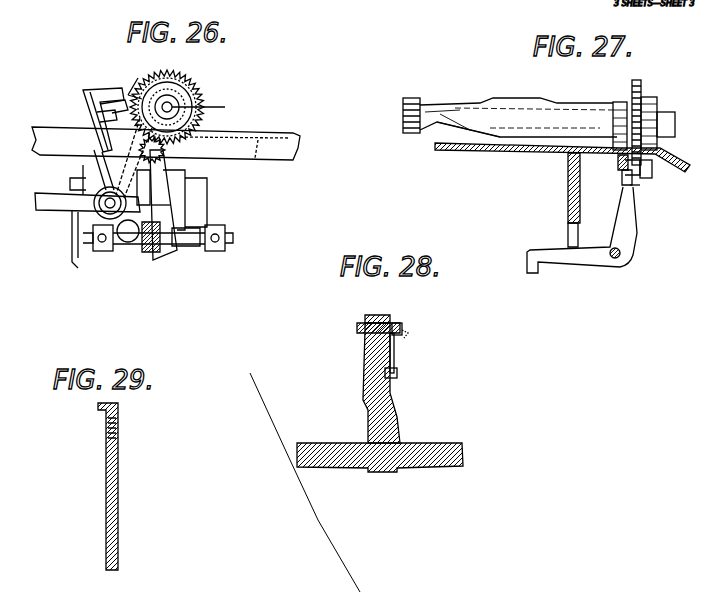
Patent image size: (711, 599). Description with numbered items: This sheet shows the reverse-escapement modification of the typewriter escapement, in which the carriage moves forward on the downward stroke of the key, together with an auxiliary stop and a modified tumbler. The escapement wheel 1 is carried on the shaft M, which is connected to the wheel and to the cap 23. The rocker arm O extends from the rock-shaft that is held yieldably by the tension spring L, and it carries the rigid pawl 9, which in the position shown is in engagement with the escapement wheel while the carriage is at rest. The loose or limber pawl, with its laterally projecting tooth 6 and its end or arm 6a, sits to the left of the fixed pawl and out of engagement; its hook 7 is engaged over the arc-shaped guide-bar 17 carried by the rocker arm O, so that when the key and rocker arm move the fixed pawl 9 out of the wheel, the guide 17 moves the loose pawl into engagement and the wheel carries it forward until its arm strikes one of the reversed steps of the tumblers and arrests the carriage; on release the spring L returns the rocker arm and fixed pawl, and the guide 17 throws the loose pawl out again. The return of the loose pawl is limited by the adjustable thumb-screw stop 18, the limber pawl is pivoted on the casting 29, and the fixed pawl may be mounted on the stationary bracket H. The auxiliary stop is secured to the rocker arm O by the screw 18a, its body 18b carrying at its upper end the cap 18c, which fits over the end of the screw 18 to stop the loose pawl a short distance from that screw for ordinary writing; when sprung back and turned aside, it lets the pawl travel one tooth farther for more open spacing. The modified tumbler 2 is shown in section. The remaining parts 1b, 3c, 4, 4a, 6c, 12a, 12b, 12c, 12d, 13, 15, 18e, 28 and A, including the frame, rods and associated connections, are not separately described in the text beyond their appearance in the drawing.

In FIG. 26, the gear wheel 1 is at (196, 88).
In FIG. 27, the gear wheel 1 is at (641, 85).
In FIG. 26, the roller 1b is at (125, 250).
In FIG. 29, the plate 2 is at (119, 420).
In FIG. 26, the bracket arm 3c is at (98, 110).
In FIG. 26, the pawl 4 is at (140, 78).
In FIG. 26, the bracket 4a is at (83, 93).
In FIG. 27, the tooth 6 is at (652, 168).
In FIG. 27, the end of limber pawl 6a is at (620, 102).
In FIG. 27, the lug 6c is at (618, 163).
In FIG. 27, the hook 7 is at (622, 178).
In FIG. 26, the rigid pawl 9 is at (166, 168).
In FIG. 26, the bearing block 12a is at (95, 232).
In FIG. 26, the wire 12b is at (76, 264).
In FIG. 26, the pinion 12c is at (142, 250).
In FIG. 26, the bearing block 12d is at (180, 258).
In FIG. 27, the hub 13 is at (657, 102).
In FIG. 26, the bar 15 is at (92, 206).
In FIG. 27, the bar 15 is at (640, 185).
In FIG. 26, the arc-shaped guide-bar 17 is at (120, 160).
In FIG. 27, the arc-shaped guide-bar 17 is at (622, 167).
In FIG. 26, the adjustable stop 18 is at (170, 158).
In FIG. 28, the adjustable stop 18 is at (356, 330).
In FIG. 28, the screw 18a is at (399, 373).
In FIG. 28, the body of auxiliary stop 18b is at (395, 362).
In FIG. 28, the cap 18c is at (400, 325).
In FIG. 28, the spring 18e is at (408, 334).
In FIG. 26, the cap 23 is at (183, 103).
In FIG. 27, the knob 28 is at (403, 115).
In FIG. 27, the casting 29 is at (530, 107).
In FIG. 26, the frame bar A is at (290, 140).
In FIG. 27, the frame bar A is at (672, 160).
In FIG. 26, the stationary bracket H is at (75, 180).
In FIG. 27, the stationary bracket H is at (568, 210).
In FIG. 26, the tension spring L is at (155, 252).
In FIG. 26, the shaft M is at (199, 111).
In FIG. 26, the rocker arm O is at (185, 226).
In FIG. 27, the rocker arm O is at (638, 232).
In FIG. 28, the rocker arm O is at (394, 398).